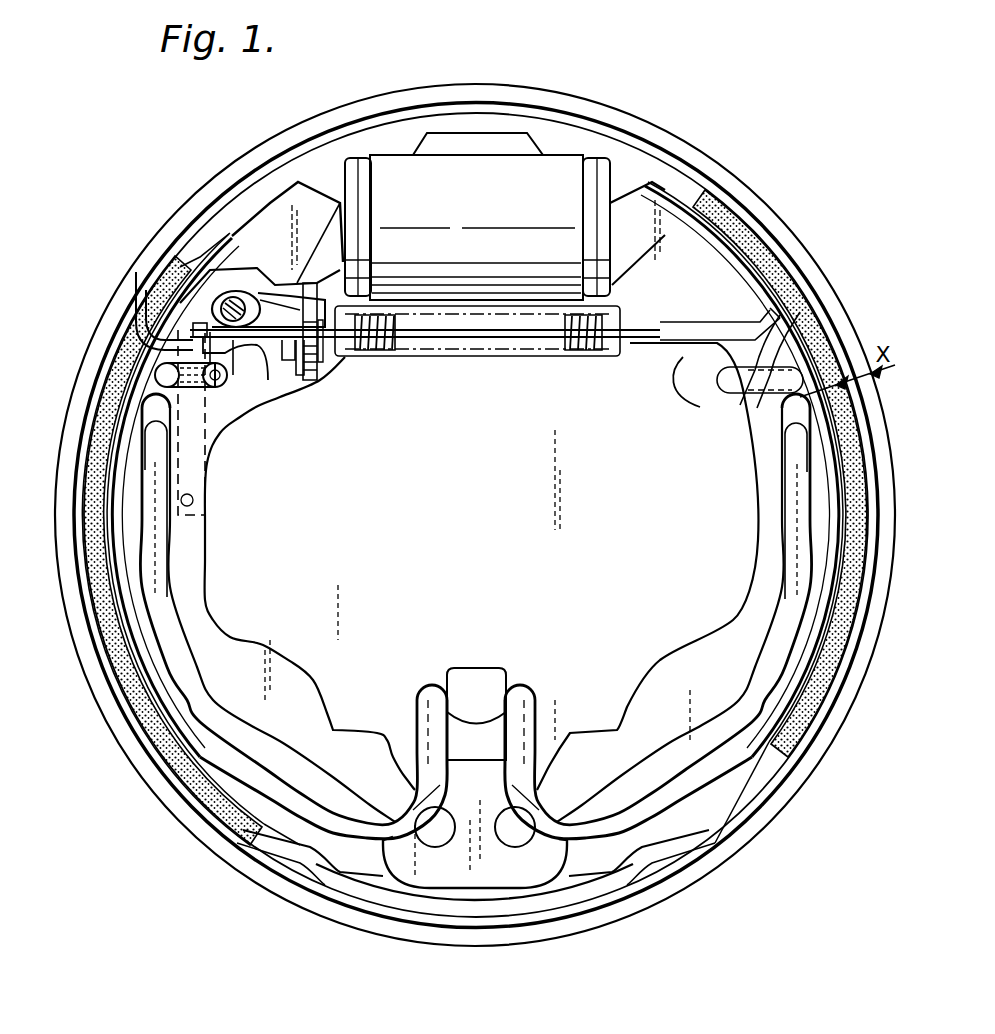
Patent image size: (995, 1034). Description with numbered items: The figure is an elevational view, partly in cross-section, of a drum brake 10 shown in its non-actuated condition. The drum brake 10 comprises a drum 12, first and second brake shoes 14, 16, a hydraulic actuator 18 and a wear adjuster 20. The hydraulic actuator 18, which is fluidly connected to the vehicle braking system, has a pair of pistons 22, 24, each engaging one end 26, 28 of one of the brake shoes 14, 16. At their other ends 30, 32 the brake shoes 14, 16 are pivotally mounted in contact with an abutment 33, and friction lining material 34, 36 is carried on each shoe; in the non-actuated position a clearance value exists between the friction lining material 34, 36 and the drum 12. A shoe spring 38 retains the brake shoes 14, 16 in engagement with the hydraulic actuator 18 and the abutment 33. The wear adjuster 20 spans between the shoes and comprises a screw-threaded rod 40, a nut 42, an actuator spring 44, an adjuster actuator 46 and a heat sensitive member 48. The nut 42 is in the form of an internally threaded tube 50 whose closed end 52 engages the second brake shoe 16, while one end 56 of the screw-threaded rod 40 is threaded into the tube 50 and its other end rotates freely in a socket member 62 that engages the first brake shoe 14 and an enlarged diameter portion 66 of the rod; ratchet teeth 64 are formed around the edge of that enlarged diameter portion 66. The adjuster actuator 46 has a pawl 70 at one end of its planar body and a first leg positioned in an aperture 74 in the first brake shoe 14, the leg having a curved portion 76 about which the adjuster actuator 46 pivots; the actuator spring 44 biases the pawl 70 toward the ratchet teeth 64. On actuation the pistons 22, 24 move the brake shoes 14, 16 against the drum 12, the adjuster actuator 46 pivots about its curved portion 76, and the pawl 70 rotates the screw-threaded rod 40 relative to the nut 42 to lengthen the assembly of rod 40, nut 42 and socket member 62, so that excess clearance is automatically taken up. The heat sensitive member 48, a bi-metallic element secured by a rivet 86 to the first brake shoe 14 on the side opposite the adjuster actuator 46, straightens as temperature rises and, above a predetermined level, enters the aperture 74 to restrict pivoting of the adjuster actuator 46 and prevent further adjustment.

The drum brake 10 is at (152, 215).
The drum 12 is at (498, 98).
The first brake shoe 14 is at (192, 557).
The second brake shoe 16 is at (752, 575).
The hydraulic actuator 18 is at (537, 172).
The wear adjuster 20 is at (403, 371).
The piston 22 is at (365, 160).
The piston 24 is at (592, 185).
The end of first brake shoe 26 is at (318, 204).
The end of second brake shoe 28 is at (660, 212).
The other end of first brake shoe 30 is at (367, 855).
The other end of second brake shoe 32 is at (576, 855).
The abutment 33 is at (477, 872).
The friction lining material 34 is at (175, 775).
The friction lining material 36 is at (822, 728).
The shoe spring 38 is at (432, 690).
The screw-threaded rod 40 is at (324, 372).
The nut 42 is at (479, 372).
The actuator spring 44 is at (592, 360).
The adjuster actuator 46 is at (196, 298).
The heat sensitive member 48 is at (214, 458).
The tube 50 is at (548, 358).
The closed end 52 is at (658, 340).
The end of screw-threaded rod 56 is at (348, 368).
The socket member 62 is at (290, 362).
The ratchet teeth 64 is at (309, 388).
The enlarged diameter portion 66 is at (299, 378).
The pawl 70 is at (262, 292).
The aperture 74 is at (160, 372).
The curved portion 76 is at (230, 403).
The rivet 86 is at (196, 502).